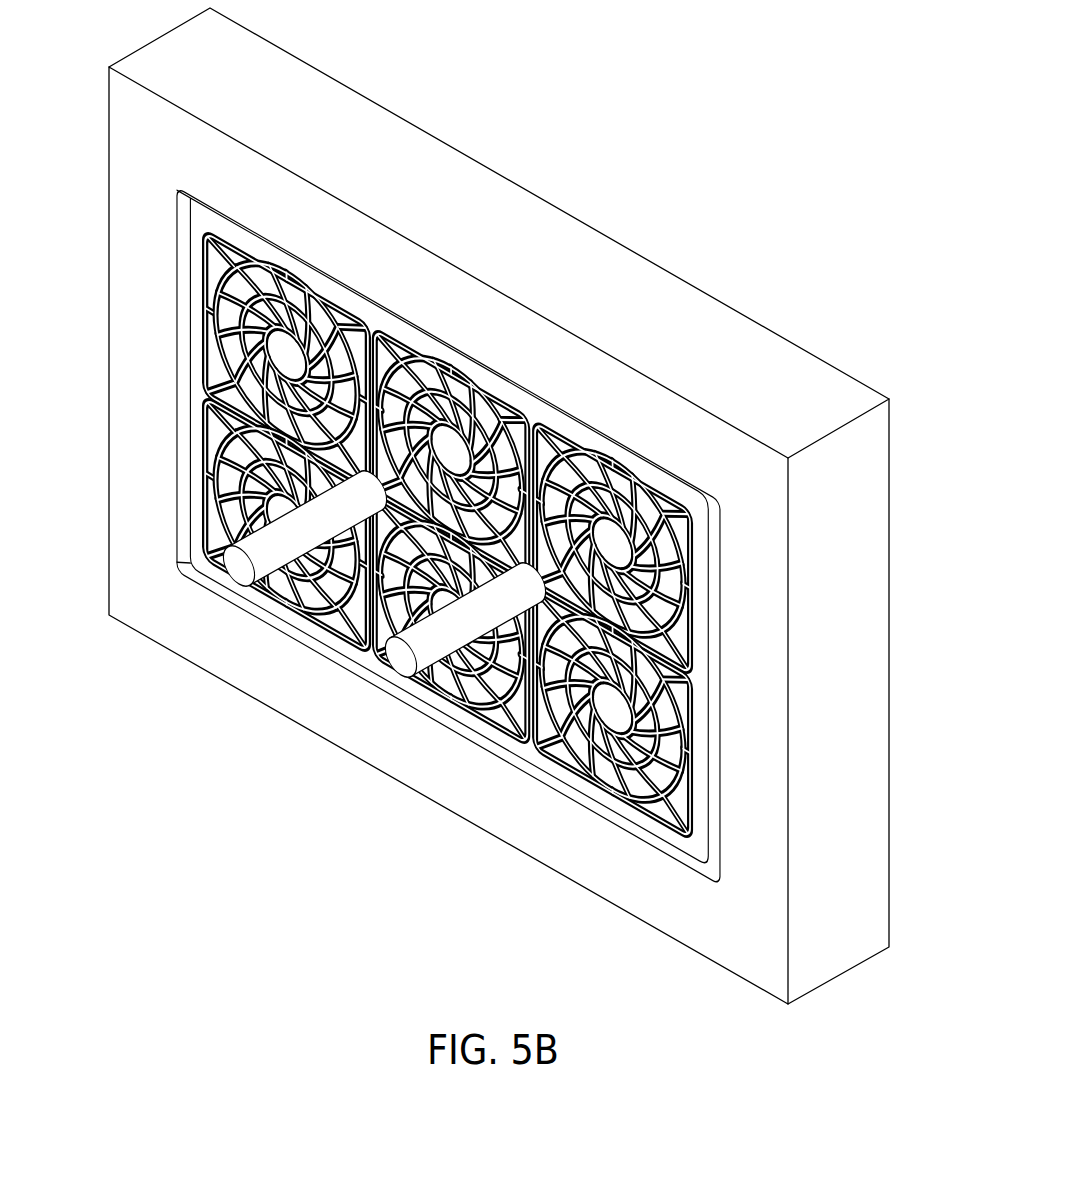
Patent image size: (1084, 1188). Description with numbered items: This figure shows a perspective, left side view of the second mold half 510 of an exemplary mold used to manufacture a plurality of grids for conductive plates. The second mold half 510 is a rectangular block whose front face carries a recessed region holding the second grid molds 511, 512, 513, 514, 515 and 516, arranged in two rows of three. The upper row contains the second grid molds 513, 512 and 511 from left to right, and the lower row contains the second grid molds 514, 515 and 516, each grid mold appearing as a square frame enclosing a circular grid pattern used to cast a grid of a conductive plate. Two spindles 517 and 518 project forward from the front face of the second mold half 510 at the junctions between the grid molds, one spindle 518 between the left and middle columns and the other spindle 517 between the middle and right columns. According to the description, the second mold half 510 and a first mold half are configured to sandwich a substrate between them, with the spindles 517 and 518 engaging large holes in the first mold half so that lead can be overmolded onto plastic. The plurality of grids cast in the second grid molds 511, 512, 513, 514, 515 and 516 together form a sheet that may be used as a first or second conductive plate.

The second mold half 510 is at (751, 122).
The second grid mold 511 is at (600, 465).
The second grid mold 512 is at (453, 380).
The second grid mold 513 is at (277, 278).
The second grid mold 514 is at (287, 607).
The second grid mold 515 is at (497, 725).
The second grid mold 516 is at (622, 795).
The spindle 517 is at (403, 668).
The spindle 518 is at (226, 584).